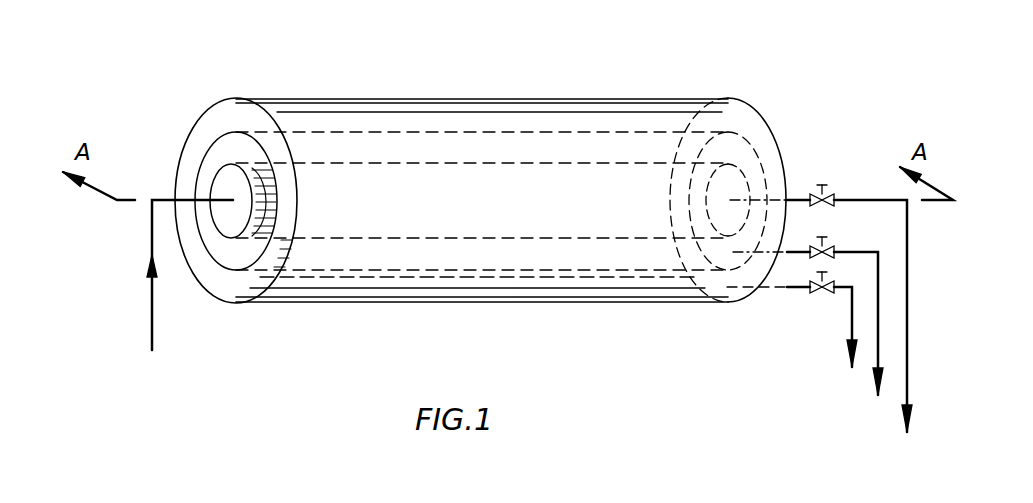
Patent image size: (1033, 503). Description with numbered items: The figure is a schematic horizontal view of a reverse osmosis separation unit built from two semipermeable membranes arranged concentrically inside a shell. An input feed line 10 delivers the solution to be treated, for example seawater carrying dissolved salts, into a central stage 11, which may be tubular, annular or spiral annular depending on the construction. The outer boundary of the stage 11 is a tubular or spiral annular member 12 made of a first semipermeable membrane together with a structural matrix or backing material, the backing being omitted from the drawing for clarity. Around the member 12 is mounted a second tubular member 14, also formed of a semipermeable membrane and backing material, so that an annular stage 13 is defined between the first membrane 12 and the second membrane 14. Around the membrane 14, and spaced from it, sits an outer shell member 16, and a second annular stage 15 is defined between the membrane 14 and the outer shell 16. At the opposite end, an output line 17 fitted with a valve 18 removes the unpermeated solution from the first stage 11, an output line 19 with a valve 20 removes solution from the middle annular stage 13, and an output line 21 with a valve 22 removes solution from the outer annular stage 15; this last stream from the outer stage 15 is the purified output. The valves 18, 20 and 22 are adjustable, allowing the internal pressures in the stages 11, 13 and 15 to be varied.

The input feed line 10 is at (164, 195).
The stage 11 is at (233, 227).
The tubular or spiral annular member 12 is at (252, 240).
The annular stage 13 is at (246, 148).
The second tubular member 14 is at (352, 132).
The second annular stage 15 is at (226, 115).
The outer shell member 16 is at (495, 100).
The output line 17 is at (797, 200).
The valve 18 is at (828, 193).
The output line 19 is at (795, 252).
The valve 20 is at (829, 247).
The output line 21 is at (788, 290).
The valve 22 is at (822, 293).